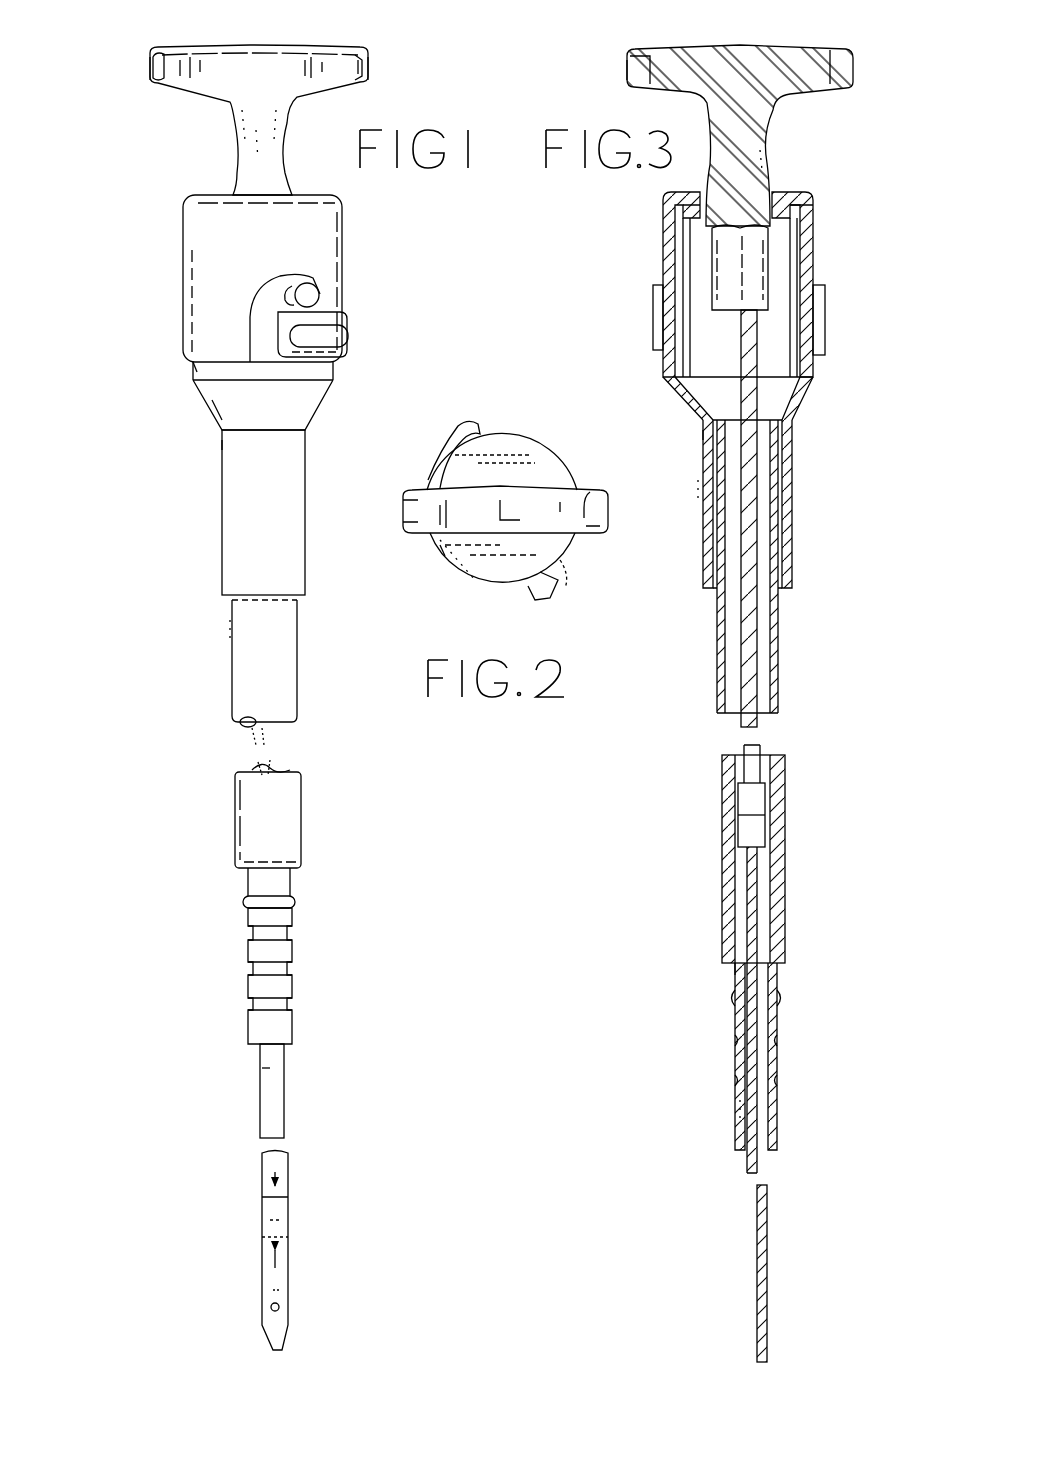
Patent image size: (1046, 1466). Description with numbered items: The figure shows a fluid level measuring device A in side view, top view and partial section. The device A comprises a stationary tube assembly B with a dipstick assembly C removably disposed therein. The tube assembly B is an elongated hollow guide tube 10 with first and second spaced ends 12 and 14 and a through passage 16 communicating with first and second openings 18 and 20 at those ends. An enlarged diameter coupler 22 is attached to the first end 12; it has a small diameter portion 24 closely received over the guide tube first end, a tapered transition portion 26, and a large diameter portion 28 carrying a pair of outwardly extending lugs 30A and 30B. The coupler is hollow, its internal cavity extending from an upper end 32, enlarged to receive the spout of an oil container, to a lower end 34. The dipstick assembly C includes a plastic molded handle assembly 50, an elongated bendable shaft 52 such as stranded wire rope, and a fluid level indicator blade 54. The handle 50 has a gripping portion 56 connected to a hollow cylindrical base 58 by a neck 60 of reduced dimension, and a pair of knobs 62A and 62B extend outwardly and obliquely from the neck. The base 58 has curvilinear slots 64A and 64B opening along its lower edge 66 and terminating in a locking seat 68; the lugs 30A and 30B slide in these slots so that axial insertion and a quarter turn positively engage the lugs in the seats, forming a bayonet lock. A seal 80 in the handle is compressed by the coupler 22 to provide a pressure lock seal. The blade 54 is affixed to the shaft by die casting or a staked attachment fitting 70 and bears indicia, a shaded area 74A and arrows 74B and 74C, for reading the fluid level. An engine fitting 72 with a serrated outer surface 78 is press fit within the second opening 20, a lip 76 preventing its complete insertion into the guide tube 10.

In FIG. 1, the guide tube 10 is at (294, 706).
In FIG. 3, the guide tube 10 is at (774, 703).
In FIG. 3, the first end 12 is at (782, 437).
In FIG. 1, the second end 14 is at (300, 870).
In FIG. 3, the second end 14 is at (785, 966).
In FIG. 1, the through passage 16 is at (246, 724).
In FIG. 3, the through passage 16 is at (760, 668).
In FIG. 3, the first opening 18 is at (795, 405).
In FIG. 3, the second opening 20 is at (735, 970).
In FIG. 1, the coupler 22 is at (190, 432).
In FIG. 3, the coupler 22 is at (688, 384).
In FIG. 1, the small diameter portion 24 is at (303, 590).
In FIG. 3, the small diameter portion 24 is at (784, 512).
In FIG. 1, the tapered transition portion 26 is at (302, 426).
In FIG. 3, the tapered transition portion 26 is at (805, 394).
In FIG. 1, the large diameter portion 28 is at (338, 376).
In FIG. 3, the large diameter portion 28 is at (800, 252).
In FIG. 1, the lug 30A is at (322, 296).
In FIG. 2, the lug 30A is at (550, 580).
In FIG. 3, the lug 30A is at (660, 298).
In FIG. 2, the lug 30B is at (470, 432).
In FIG. 3, the lug 30B is at (824, 300).
In FIG. 3, the upper end 32 is at (798, 226).
In FIG. 3, the lower end 34 is at (792, 588).
In FIG. 1, the handle assembly 50 is at (184, 154).
In FIG. 2, the handle assembly 50 is at (455, 580).
In FIG. 3, the handle assembly 50 is at (840, 140).
In FIG. 1, the shaft 52 is at (284, 766).
In FIG. 3, the shaft 52 is at (760, 752).
In FIG. 1, the fluid level indicator blade 54 is at (286, 1168).
In FIG. 3, the fluid level indicator blade 54 is at (768, 1202).
In FIG. 1, the gripping portion 56 is at (272, 60).
In FIG. 3, the gripping portion 56 is at (770, 48).
In FIG. 1, the base 58 is at (183, 280).
In FIG. 2, the base 58 is at (540, 455).
In FIG. 3, the base 58 is at (662, 232).
In FIG. 1, the neck 60 is at (272, 150).
In FIG. 3, the neck 60 is at (766, 160).
In FIG. 1, the knob 62A is at (160, 60).
In FIG. 2, the knob 62A is at (415, 512).
In FIG. 3, the knob 62A is at (645, 68).
In FIG. 1, the knob 62B is at (372, 58).
In FIG. 2, the knob 62B is at (598, 494).
In FIG. 3, the knob 62B is at (832, 62).
In FIG. 1, the slot 64A is at (252, 330).
In FIG. 1, the slot 64B is at (295, 275).
In FIG. 1, the lower edge 66 is at (192, 366).
In FIG. 3, the lower edge 66 is at (810, 372).
In FIG. 1, the locking seat 68 is at (318, 288).
In FIG. 3, the attachment fitting 70 is at (760, 828).
In FIG. 3, the engine fitting 72 is at (780, 1054).
In FIG. 1, the shaded area 74A is at (288, 1222).
In FIG. 1, the arrow 74B is at (262, 1185).
In FIG. 1, the arrow 74C is at (266, 1262).
In FIG. 1, the lip 76 is at (244, 902).
In FIG. 3, the lip 76 is at (784, 1002).
In FIG. 1, the serrated outer surface 78 is at (302, 965).
In FIG. 3, the serrated outer surface 78 is at (780, 1082).
In FIG. 3, the seal 80 is at (800, 208).
In FIG. 1, the fluid level measuring device A is at (118, 800).
In FIG. 3, the fluid level measuring device A is at (848, 546).
In FIG. 1, the stationary tube assembly B is at (294, 834).
In FIG. 3, the stationary tube assembly B is at (790, 854).
In FIG. 1, the dipstick assembly C is at (318, 1072).
In FIG. 3, the dipstick assembly C is at (706, 1108).